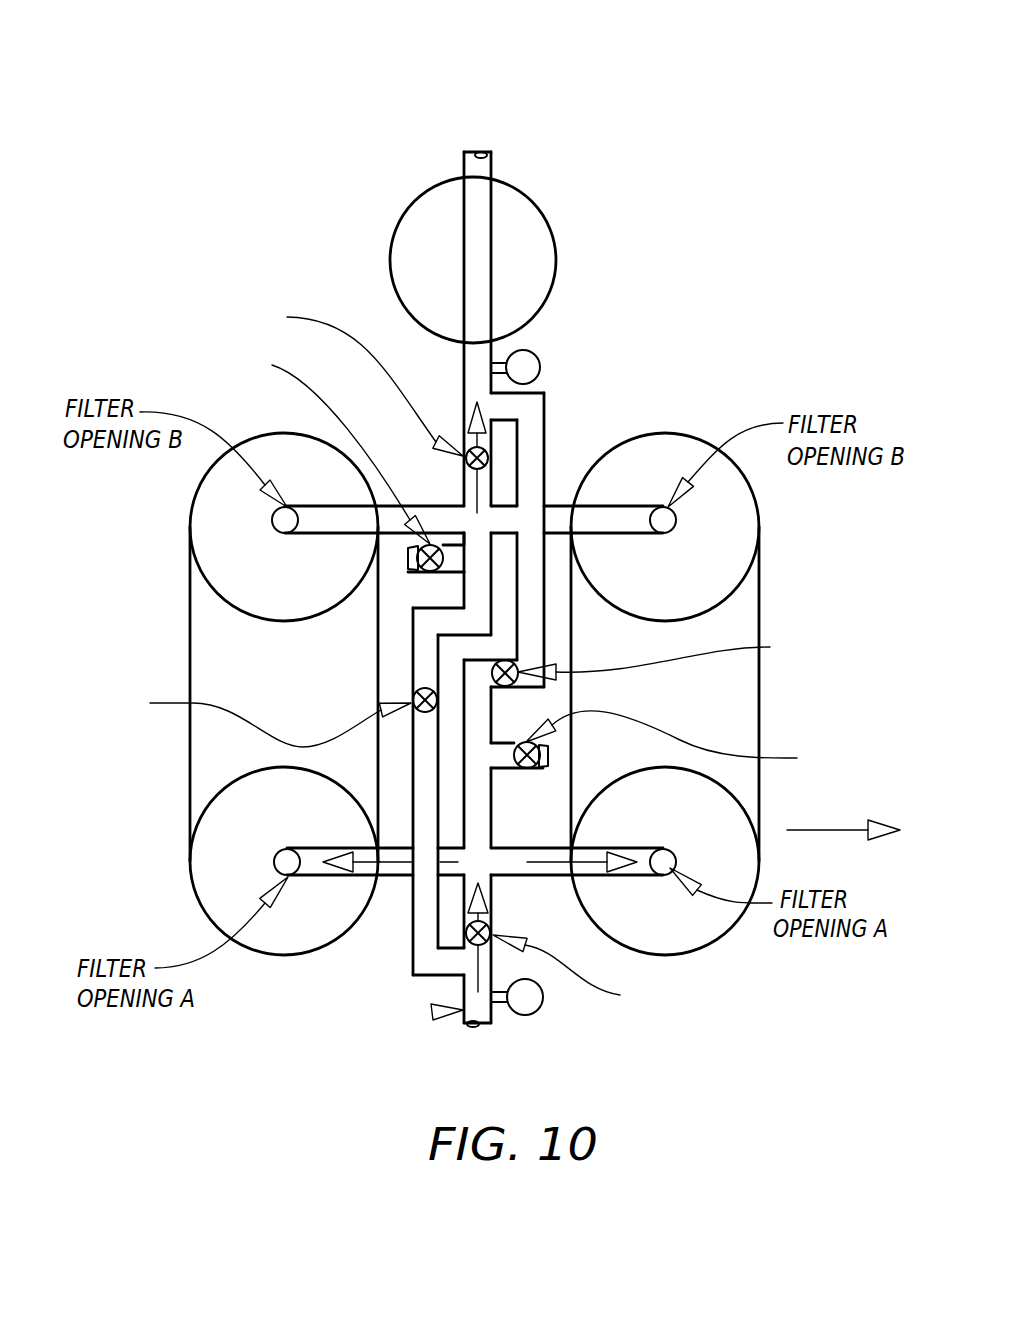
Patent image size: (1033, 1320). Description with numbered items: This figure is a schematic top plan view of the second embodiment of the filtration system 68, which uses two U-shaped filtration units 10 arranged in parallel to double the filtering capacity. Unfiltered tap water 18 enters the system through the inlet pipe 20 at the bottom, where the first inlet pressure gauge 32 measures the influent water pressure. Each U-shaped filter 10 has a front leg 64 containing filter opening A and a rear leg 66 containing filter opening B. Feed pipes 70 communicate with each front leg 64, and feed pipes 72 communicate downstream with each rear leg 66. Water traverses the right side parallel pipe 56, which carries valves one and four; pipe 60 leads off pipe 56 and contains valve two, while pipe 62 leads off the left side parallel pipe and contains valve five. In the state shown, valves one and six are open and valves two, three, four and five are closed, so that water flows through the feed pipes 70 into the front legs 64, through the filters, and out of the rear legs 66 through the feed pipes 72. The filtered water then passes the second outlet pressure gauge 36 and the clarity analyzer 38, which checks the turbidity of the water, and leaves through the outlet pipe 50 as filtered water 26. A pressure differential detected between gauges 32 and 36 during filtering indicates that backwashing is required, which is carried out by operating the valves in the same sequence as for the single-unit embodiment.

The filtration system 68 is at (335, 128).
The outlet pipe 50 is at (462, 150).
The filtered water 26 is at (521, 158).
The clarity analyzer 38 is at (368, 218).
The second outlet pressure gauge 36 is at (568, 345).
The right side parallel pipe 56 is at (547, 405).
The feed pipes 72 is at (443, 512).
The U-shaped filter 10 is at (481, 694).
The rear leg 66 is at (291, 592).
The front leg 64 is at (291, 826).
The pipe 62 is at (408, 572).
The pipe 60 is at (547, 757).
The feed pipes 70 is at (518, 847).
The inlet pipe 20 is at (475, 1028).
The first inlet pressure gauge 32 is at (540, 1040).
The unfiltered tap water 18 is at (432, 1012).